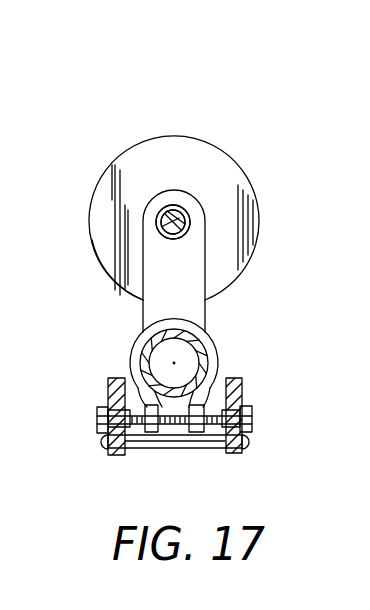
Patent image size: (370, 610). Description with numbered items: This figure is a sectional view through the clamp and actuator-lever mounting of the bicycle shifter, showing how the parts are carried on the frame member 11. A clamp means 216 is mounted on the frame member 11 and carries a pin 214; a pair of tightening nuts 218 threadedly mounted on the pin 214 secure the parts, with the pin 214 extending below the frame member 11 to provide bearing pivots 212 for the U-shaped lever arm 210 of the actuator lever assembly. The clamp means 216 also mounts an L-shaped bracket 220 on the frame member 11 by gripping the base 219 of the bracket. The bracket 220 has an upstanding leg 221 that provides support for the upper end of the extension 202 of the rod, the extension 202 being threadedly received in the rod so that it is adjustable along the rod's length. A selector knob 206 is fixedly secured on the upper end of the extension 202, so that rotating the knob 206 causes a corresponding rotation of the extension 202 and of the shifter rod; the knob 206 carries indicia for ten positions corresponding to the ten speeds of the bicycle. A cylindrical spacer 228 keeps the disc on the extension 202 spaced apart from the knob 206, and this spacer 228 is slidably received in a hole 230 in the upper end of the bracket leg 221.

The selector knob 206 is at (203, 142).
The cylindrical spacer 228 is at (172, 205).
The extension 202 is at (188, 221).
The hole 230 is at (162, 230).
The upstanding leg 221 is at (188, 261).
The L-shaped bracket 220 is at (140, 309).
The frame member 11 is at (188, 320).
The clamp means 216 is at (210, 347).
The base 219 is at (142, 330).
The U-shaped lever arm 210 is at (233, 381).
The pin 214 is at (214, 411).
The pivots 212 is at (98, 420).
The tightening nuts 218 is at (192, 432).